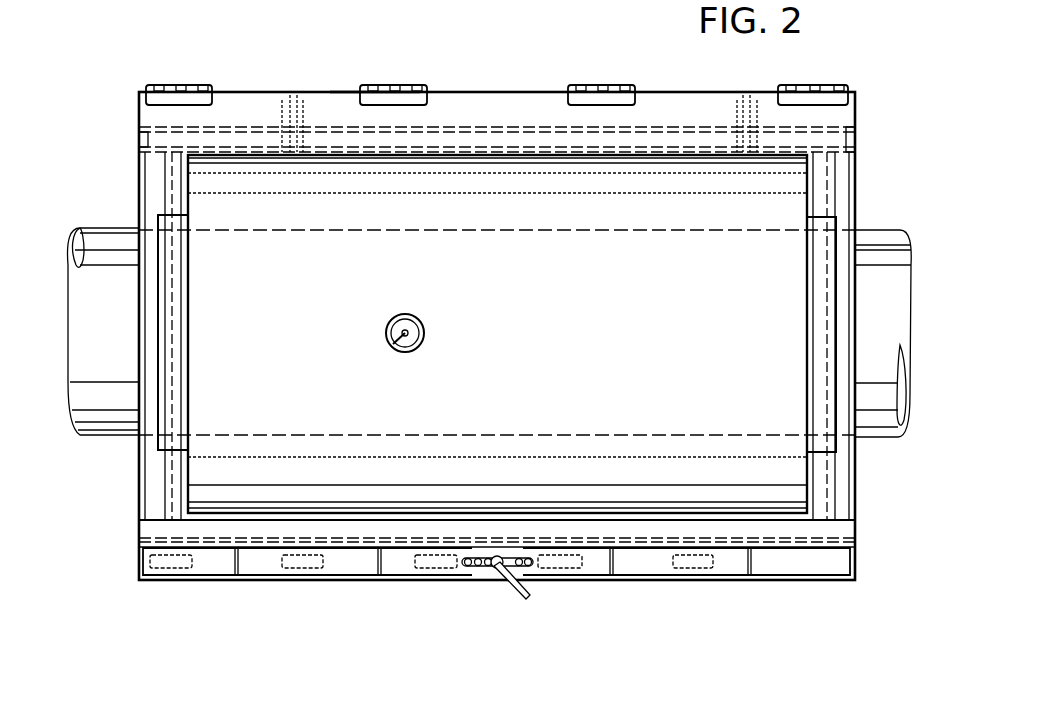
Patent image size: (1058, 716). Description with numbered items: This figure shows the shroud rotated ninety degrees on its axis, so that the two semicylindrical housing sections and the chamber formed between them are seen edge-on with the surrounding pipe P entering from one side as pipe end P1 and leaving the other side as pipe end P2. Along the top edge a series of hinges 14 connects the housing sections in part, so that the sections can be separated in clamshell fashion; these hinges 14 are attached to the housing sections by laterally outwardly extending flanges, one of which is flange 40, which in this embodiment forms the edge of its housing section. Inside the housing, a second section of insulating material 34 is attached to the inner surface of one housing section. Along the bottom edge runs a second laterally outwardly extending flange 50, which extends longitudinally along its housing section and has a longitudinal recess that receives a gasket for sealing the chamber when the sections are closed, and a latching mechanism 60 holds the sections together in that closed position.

The hinges 14 is at (188, 83).
The second section of insulating material 34 is at (375, 46).
The laterally outwardly extending flange 40 is at (320, 110).
The laterally outwardly extending flange 50 is at (258, 557).
The latching mechanism 60 is at (478, 600).
The pipe P is at (885, 215).
The first pipe end P1 is at (103, 398).
The second pipe end P2 is at (870, 410).